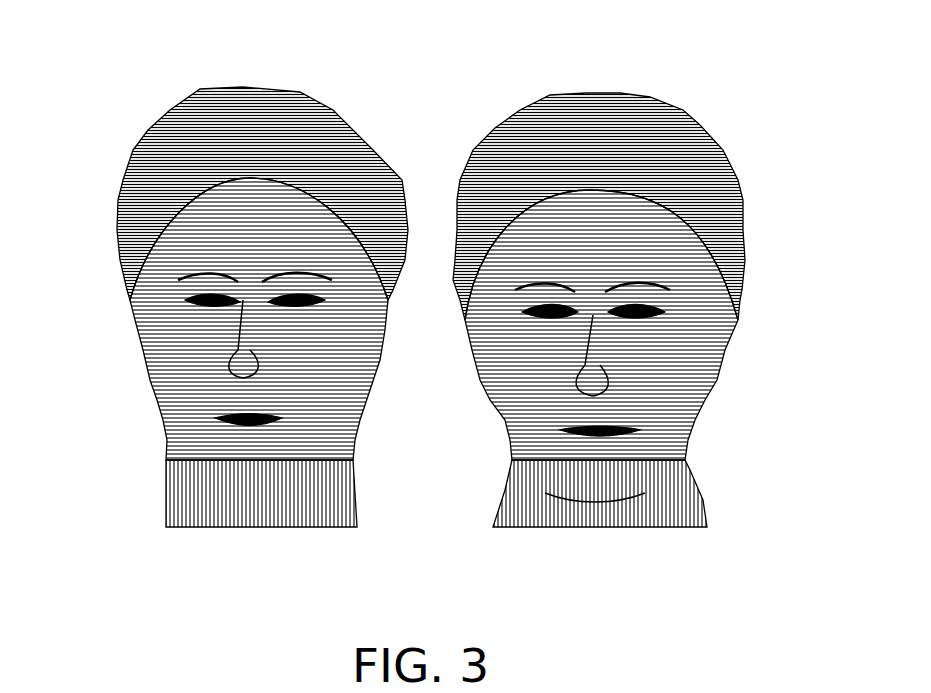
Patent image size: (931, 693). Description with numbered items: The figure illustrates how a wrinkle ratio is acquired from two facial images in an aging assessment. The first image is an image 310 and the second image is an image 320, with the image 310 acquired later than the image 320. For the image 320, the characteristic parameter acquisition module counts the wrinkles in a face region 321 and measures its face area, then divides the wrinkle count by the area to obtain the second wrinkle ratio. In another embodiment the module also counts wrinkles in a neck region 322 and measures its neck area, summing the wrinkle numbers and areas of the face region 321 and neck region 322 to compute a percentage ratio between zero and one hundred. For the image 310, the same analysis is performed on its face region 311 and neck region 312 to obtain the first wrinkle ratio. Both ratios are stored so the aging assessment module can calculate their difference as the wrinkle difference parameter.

The image 310 is at (635, 276).
The face region 311 is at (672, 408).
The neck region 312 is at (672, 495).
The image 320 is at (233, 269).
The face region 321 is at (178, 410).
The neck region 322 is at (178, 493).